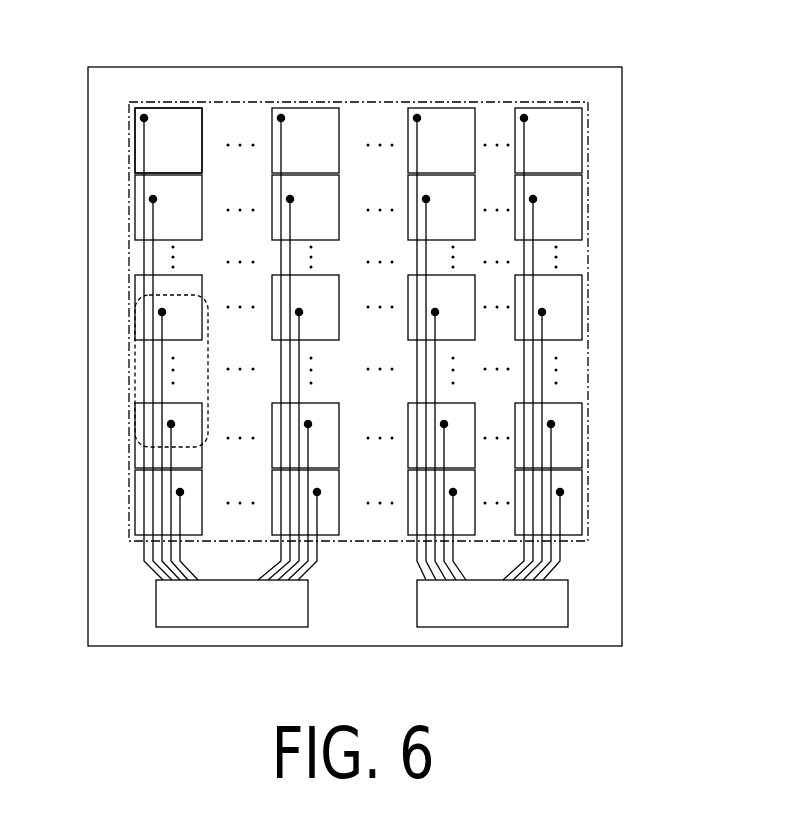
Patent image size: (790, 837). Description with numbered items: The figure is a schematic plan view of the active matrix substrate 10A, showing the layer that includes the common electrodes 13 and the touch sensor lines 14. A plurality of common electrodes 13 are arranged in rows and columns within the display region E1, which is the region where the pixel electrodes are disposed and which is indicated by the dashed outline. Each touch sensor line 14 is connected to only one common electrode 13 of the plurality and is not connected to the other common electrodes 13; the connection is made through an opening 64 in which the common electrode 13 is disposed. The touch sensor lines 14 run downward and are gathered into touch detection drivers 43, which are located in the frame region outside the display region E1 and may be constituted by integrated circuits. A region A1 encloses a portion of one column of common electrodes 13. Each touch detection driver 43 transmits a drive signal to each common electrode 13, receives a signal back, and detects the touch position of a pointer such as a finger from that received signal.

The active matrix substrate 10A is at (623, 67).
The common electrode 13 is at (162, 108).
The touch sensor line 14 is at (147, 161).
The opening 64 is at (144, 118).
The touch detection driver 43 is at (156, 604).
The region A1 is at (137, 296).
The display region E1 is at (600, 102).